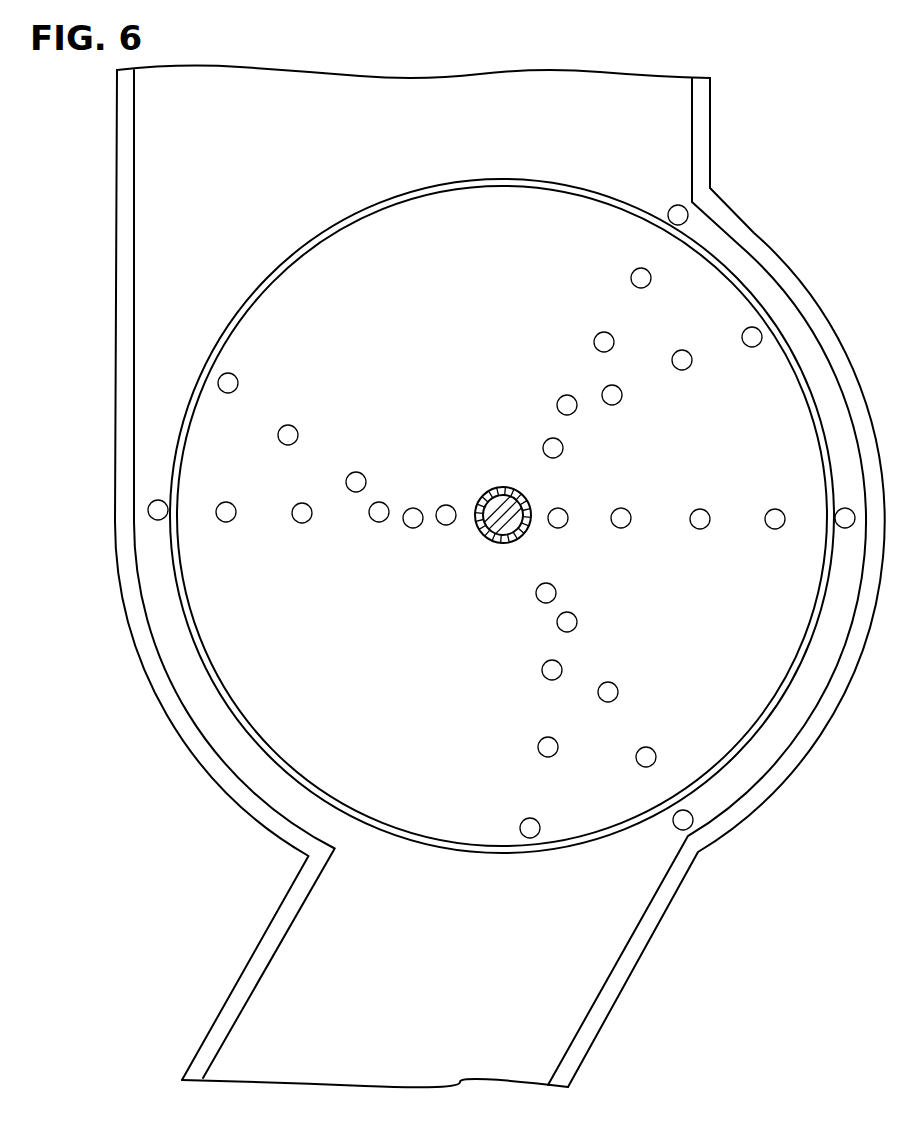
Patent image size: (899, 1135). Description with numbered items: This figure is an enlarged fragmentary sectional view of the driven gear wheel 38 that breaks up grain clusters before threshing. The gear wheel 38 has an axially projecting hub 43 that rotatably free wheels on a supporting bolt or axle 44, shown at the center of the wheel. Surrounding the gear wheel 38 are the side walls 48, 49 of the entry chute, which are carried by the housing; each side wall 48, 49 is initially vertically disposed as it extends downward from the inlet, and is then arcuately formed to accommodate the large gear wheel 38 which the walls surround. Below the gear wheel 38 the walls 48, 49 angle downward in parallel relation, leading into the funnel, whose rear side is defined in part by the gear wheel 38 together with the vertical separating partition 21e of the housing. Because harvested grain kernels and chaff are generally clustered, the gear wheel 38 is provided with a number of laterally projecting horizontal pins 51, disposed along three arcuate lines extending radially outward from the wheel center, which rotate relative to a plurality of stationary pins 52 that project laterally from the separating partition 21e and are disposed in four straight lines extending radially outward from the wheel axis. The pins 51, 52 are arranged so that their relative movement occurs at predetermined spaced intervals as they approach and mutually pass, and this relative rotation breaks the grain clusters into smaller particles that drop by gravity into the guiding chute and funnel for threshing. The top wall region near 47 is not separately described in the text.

The housing top wall 47 is at (392, 100).
The side wall 48 is at (117, 180).
The side wall 49 is at (710, 120).
The gear wheel 38 is at (462, 337).
The hub 43 is at (500, 544).
The supporting bolt or axle 44 is at (497, 488).
The horizontal pins 51 is at (749, 346).
The stationary pins 52 is at (669, 209).
The separating partition 21e is at (466, 1006).